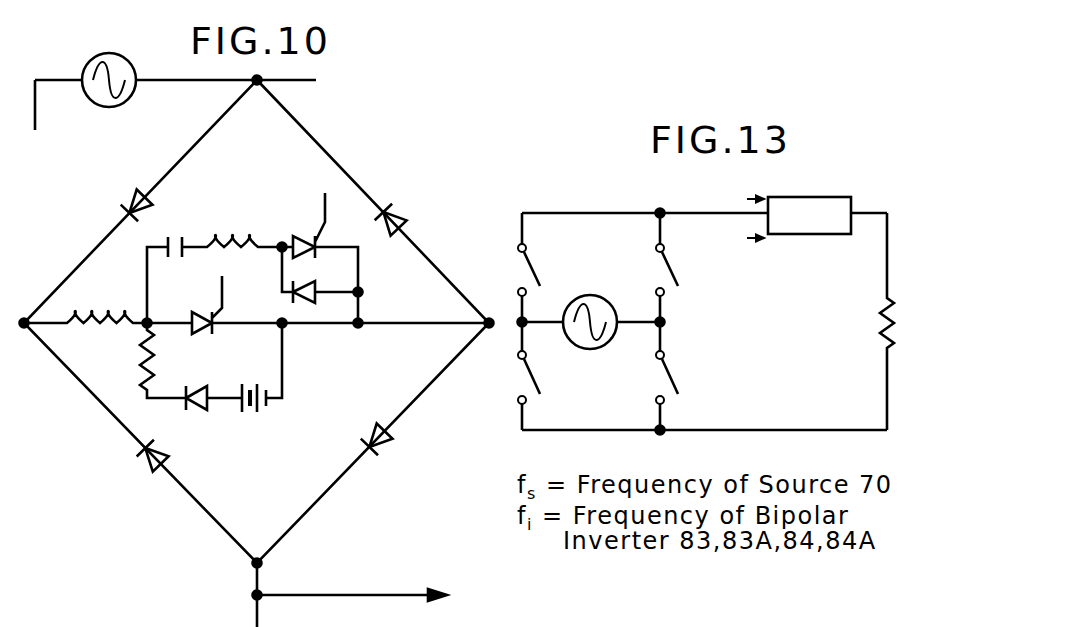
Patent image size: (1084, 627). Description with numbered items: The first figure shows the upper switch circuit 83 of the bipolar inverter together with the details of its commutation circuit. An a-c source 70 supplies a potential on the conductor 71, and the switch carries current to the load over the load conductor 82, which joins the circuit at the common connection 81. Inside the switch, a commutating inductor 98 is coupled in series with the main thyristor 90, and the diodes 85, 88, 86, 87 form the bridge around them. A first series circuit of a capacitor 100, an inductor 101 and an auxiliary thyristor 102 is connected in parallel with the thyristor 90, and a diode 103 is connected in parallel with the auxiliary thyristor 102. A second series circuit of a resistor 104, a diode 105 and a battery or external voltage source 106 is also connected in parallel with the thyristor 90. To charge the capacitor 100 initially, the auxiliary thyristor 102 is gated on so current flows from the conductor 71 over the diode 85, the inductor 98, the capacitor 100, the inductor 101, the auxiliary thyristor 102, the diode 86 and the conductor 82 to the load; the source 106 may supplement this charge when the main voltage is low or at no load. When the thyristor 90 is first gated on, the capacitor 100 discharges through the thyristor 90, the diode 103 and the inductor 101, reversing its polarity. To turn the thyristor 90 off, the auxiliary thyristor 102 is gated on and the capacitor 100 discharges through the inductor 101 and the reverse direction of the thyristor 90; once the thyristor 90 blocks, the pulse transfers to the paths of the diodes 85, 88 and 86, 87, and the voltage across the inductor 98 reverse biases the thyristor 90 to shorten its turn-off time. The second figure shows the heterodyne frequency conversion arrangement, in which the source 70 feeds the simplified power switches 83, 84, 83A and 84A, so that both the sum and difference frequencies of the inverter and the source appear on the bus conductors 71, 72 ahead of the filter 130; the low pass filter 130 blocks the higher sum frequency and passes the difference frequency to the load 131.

In FIG. 10, the source 70 is at (146, 78).
In FIG. 13, the source 70 is at (593, 292).
In FIG. 10, the conductor 71 is at (261, 68).
In FIG. 13, the conductor 71 is at (645, 200).
In FIG. 13, the conductor 72 is at (704, 443).
In FIG. 10, the common connection 81 is at (254, 596).
In FIG. 10, the load conductor 82 is at (370, 602).
In FIG. 10, the upper switch circuit 83 is at (112, 589).
In FIG. 13, the upper switch circuit 83 is at (514, 267).
In FIG. 13, the power switch 83A is at (644, 267).
In FIG. 13, the power switch 84 is at (514, 376).
In FIG. 13, the power switch 84A is at (644, 376).
In FIG. 10, the diode 85 is at (125, 197).
In FIG. 10, the diode 86 is at (394, 445).
In FIG. 10, the diode 87 is at (144, 469).
In FIG. 10, the diode 88 is at (403, 212).
In FIG. 10, the thyristor 90 is at (214, 321).
In FIG. 10, the commutating inductor 98 is at (85, 304).
In FIG. 10, the capacitor 100 is at (173, 263).
In FIG. 10, the inductor 101 is at (239, 225).
In FIG. 10, the auxiliary thyristor 102 is at (319, 242).
In FIG. 10, the diode 103 is at (322, 285).
In FIG. 10, the resistor 104 is at (141, 360).
In FIG. 10, the diode 105 is at (210, 414).
In FIG. 10, the battery or external voltage source 106 is at (261, 383).
In FIG. 13, the filter 130 is at (794, 208).
In FIG. 13, the load resistor 131 is at (883, 321).